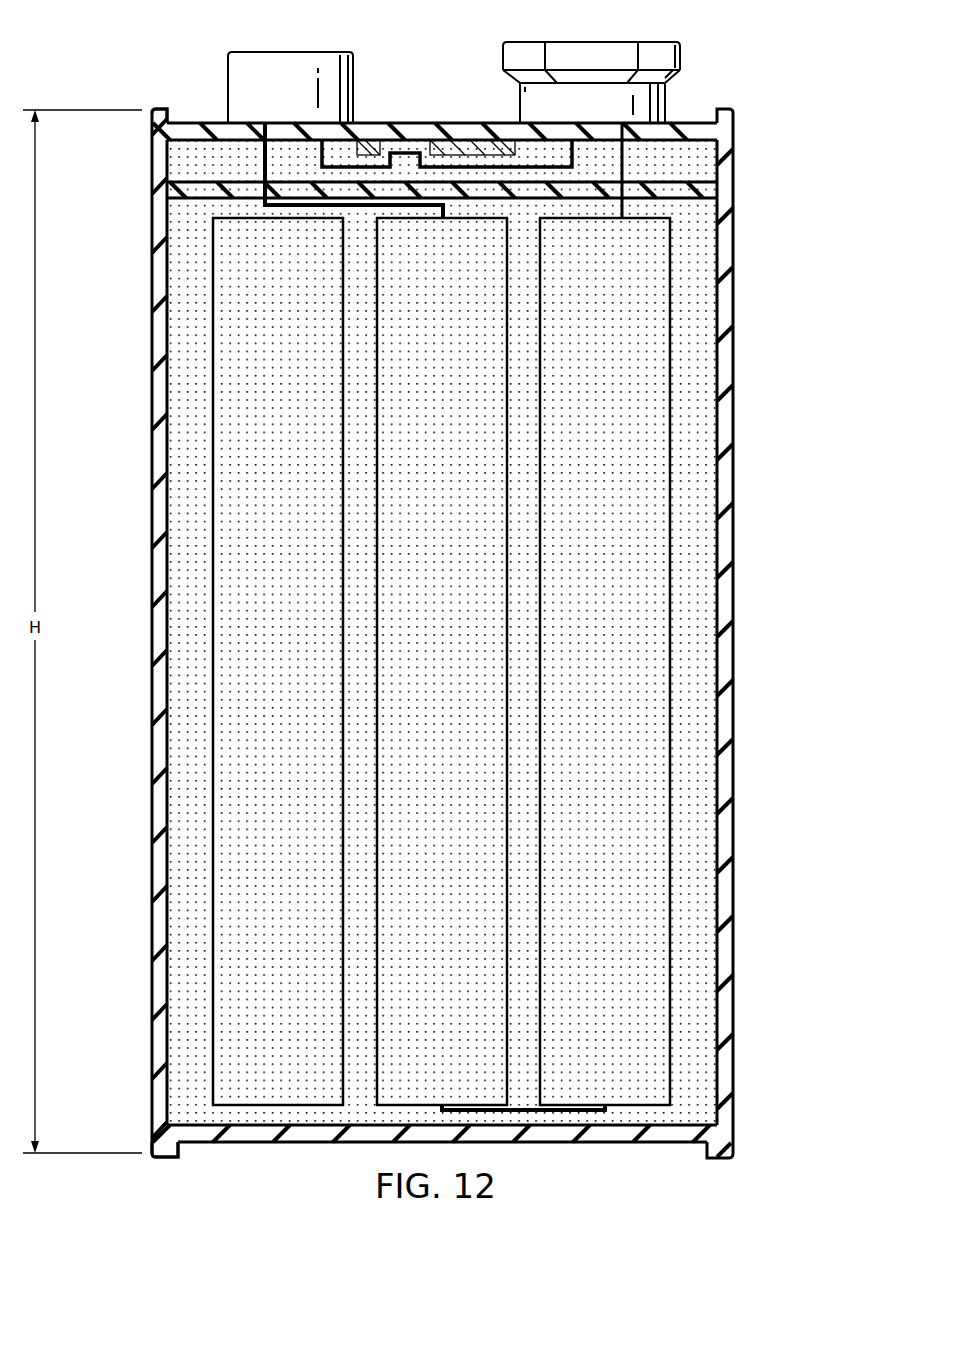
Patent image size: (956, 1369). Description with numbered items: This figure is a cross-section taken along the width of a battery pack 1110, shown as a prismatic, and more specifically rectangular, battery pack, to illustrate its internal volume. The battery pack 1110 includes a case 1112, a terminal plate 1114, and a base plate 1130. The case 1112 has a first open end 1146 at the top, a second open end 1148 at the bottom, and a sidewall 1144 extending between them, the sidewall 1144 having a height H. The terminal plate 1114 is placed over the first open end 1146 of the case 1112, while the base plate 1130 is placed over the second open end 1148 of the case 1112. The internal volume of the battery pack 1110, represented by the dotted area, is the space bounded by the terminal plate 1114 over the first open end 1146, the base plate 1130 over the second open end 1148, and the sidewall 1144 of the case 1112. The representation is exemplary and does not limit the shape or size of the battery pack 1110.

The battery pack 1110 is at (460, 628).
The case 1112 is at (735, 651).
The terminal plate 1114 is at (418, 122).
The base plate 1130 is at (598, 1143).
The sidewall 1144 is at (138, 683).
The first open end 1146 is at (153, 99).
The second open end 1148 is at (194, 1167).